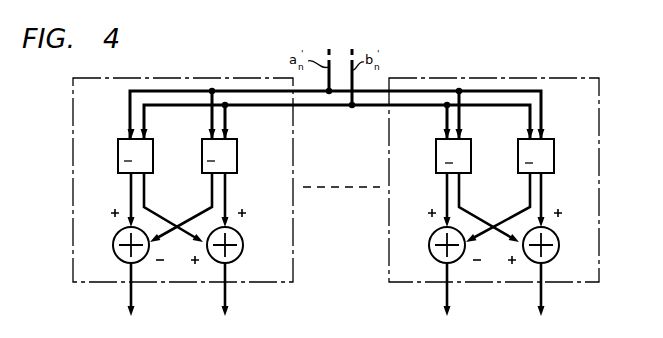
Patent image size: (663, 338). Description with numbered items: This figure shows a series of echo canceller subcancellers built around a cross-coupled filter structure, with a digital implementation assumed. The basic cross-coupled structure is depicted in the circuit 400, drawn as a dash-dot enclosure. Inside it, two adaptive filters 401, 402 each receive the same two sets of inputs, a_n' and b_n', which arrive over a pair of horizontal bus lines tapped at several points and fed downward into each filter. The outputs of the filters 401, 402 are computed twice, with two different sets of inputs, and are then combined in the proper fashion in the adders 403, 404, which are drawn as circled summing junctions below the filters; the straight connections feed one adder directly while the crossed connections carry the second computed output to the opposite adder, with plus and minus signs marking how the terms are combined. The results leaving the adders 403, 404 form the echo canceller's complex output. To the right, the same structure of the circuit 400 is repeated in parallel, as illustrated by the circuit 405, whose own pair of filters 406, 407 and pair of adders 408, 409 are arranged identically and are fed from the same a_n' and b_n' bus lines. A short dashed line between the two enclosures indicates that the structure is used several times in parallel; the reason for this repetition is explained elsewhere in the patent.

The circuit 400 is at (194, 78).
The filter 401 is at (118, 150).
The filter 402 is at (237, 160).
The adder 403 is at (120, 259).
The adder 404 is at (237, 256).
The circuit 405 is at (508, 78).
The coefficient multiplier c 406 is at (436, 153).
The coefficient multiplier d 407 is at (554, 161).
The third adder 408 is at (434, 258).
The fourth adder 409 is at (553, 257).